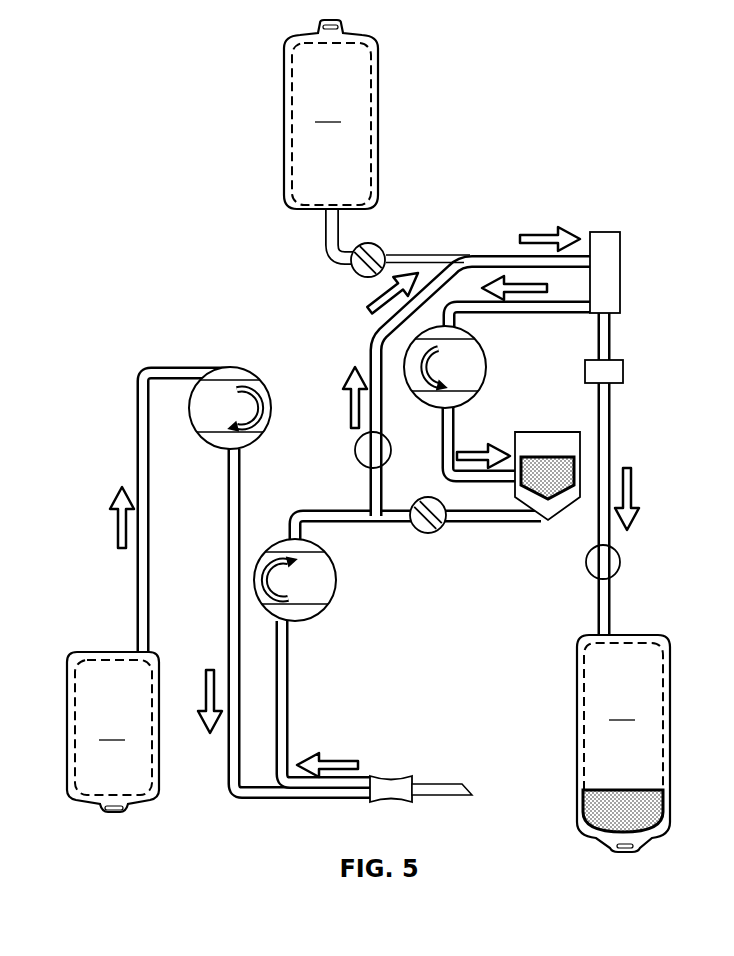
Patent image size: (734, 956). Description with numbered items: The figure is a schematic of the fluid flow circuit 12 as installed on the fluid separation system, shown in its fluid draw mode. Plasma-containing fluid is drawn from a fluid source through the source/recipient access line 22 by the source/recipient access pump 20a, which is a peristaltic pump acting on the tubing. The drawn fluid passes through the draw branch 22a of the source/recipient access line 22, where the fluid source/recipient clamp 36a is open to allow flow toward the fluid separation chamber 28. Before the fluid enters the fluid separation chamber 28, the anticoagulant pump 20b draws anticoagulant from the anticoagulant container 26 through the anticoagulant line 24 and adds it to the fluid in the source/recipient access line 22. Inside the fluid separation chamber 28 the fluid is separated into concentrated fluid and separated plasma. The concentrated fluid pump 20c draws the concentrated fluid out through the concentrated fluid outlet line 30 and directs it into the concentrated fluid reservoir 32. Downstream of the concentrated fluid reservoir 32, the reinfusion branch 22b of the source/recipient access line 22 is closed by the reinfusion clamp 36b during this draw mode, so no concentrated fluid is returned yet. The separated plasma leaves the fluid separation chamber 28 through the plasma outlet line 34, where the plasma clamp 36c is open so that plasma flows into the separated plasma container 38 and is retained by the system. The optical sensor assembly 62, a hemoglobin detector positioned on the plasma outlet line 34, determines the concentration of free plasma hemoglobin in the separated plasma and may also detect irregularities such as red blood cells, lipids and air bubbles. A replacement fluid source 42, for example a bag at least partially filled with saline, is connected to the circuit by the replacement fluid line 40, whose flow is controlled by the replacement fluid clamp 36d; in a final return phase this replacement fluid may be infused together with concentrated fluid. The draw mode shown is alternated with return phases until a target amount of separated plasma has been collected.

The fluid flow circuit 12 is at (243, 243).
The source/recipient access pump 20a is at (317, 583).
The anticoagulant pump 20b is at (232, 367).
The concentrated fluid pump 20c is at (492, 367).
The source/recipient access line 22 is at (290, 690).
The draw branch 22a is at (370, 342).
The reinfusion branch 22b is at (488, 524).
The anticoagulant line 24 is at (139, 405).
The anticoagulant container 26 is at (113, 732).
The fluid separation chamber 28 is at (621, 275).
The concentrated fluid outlet line 30 is at (455, 424).
The concentrated fluid reservoir 32 is at (588, 455).
The plasma outlet line 34 is at (612, 600).
The fluid source/recipient clamp 36a is at (353, 452).
The reinfusion clamp 36b is at (442, 535).
The plasma clamp 36c is at (586, 568).
The replacement fluid clamp 36d is at (381, 246).
The separated plasma container 38 is at (623, 743).
The replacement fluid line 40 is at (325, 242).
The replacement fluid source 42 is at (331, 114).
The optical sensor assembly 62 is at (623, 373).